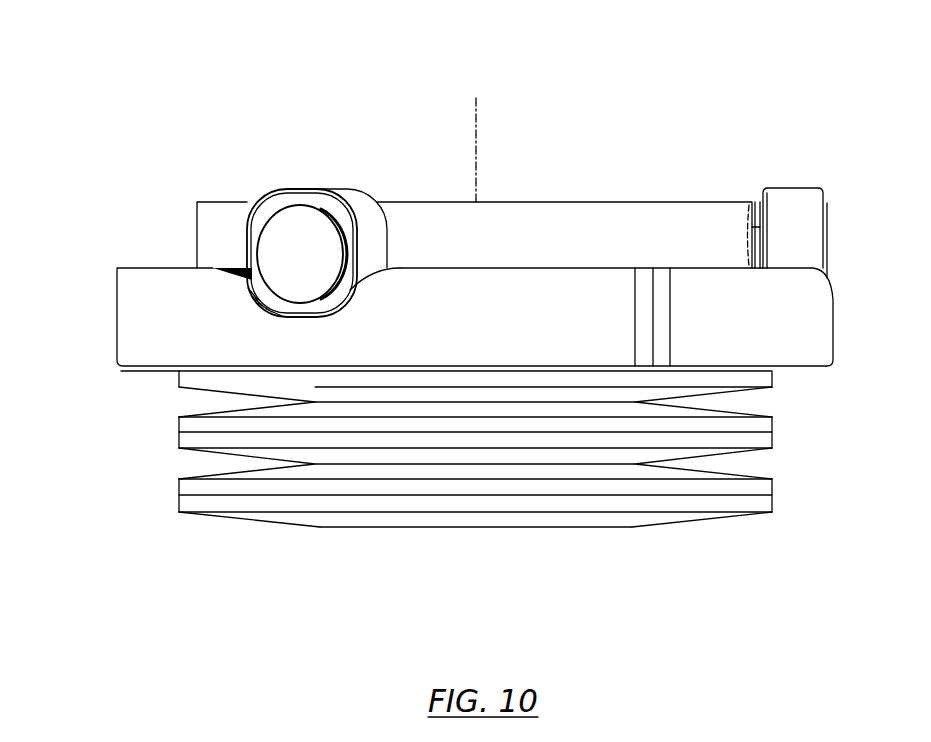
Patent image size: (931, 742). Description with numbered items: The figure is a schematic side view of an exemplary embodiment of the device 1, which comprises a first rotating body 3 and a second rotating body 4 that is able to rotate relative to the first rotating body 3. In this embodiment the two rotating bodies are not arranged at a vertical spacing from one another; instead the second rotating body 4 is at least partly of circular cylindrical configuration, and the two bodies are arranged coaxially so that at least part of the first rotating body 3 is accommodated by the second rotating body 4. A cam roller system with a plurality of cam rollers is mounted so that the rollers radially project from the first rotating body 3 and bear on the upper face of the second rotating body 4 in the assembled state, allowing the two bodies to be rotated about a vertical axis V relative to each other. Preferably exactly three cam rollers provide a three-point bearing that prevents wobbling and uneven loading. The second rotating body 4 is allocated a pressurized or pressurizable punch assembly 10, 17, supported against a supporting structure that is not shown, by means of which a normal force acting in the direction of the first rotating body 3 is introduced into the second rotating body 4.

The device 1 is at (592, 101).
The first rotating body 3 is at (213, 225).
The second rotating body 4 is at (147, 313).
The punch assembly 10 is at (183, 443).
The threaded section 17 is at (475, 449).
The vertical axis V is at (475, 128).